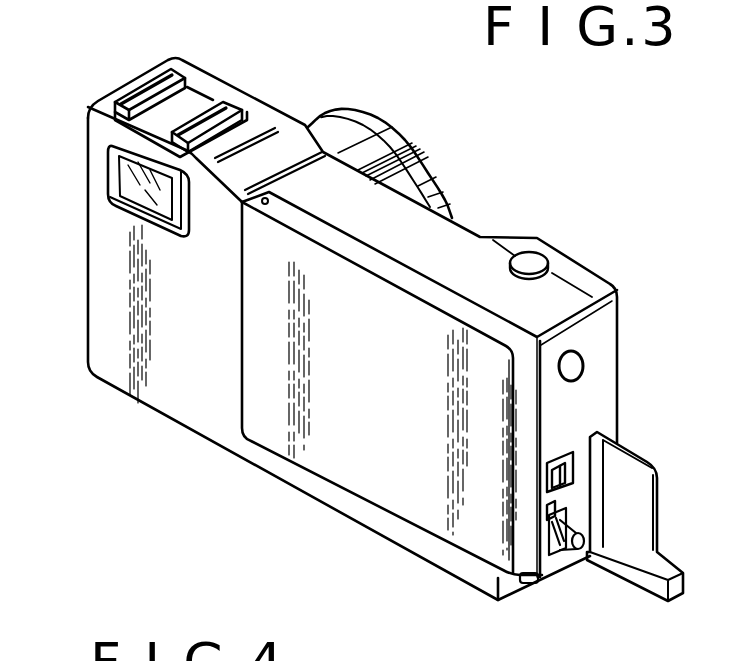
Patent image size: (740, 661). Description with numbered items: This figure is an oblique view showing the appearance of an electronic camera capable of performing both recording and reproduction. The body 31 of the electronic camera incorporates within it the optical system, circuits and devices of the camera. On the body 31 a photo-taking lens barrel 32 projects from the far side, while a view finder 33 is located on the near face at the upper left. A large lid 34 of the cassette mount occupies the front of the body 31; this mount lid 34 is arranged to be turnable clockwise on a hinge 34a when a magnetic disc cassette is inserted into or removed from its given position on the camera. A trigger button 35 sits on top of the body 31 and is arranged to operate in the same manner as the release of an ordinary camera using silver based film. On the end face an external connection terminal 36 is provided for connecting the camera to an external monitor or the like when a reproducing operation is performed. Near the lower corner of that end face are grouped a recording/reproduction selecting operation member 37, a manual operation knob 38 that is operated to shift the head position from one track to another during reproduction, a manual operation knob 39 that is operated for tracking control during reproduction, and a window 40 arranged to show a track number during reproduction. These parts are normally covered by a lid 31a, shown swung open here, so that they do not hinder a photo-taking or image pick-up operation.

The body 31 is at (173, 377).
The lid 31a is at (633, 555).
The photo-taking lens barrel 32 is at (352, 135).
The view finder 33 is at (152, 195).
The lid of cassette mount 34 is at (336, 447).
The hinge 34a is at (270, 202).
The trigger button 35 is at (533, 260).
The external connection terminal 36 is at (580, 368).
The recording/reproduction selecting operation member 37 is at (531, 585).
The manual operation knob 38 is at (580, 553).
The manual operation knob 39 is at (572, 480).
The window 40 is at (556, 508).